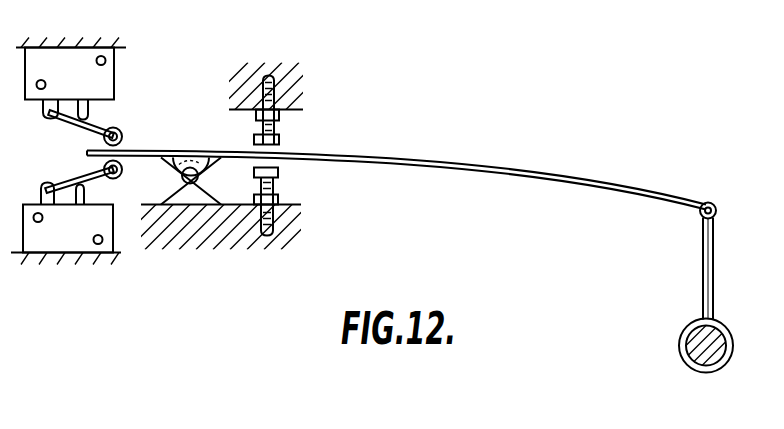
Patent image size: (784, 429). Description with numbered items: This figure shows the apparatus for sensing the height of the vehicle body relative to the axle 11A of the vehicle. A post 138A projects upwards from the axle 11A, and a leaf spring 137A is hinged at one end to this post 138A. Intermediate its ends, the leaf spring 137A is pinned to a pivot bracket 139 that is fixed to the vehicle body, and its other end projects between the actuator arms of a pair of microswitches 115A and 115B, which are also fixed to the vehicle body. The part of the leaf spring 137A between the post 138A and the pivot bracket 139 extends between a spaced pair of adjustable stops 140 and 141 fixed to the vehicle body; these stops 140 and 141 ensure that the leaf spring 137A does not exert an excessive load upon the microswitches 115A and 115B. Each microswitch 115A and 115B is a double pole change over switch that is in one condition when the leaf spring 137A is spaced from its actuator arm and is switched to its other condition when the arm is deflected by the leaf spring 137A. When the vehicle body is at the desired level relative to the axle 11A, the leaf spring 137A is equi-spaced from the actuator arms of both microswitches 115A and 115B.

The microswitch 115B is at (118, 76).
The microswitch 115A is at (67, 233).
The leaf spring 137A is at (545, 148).
The adjustable stop 140 is at (278, 136).
The adjustable stop 141 is at (277, 180).
The pivot bracket 139 is at (202, 193).
The post 138A is at (702, 263).
The axle 11A is at (697, 344).